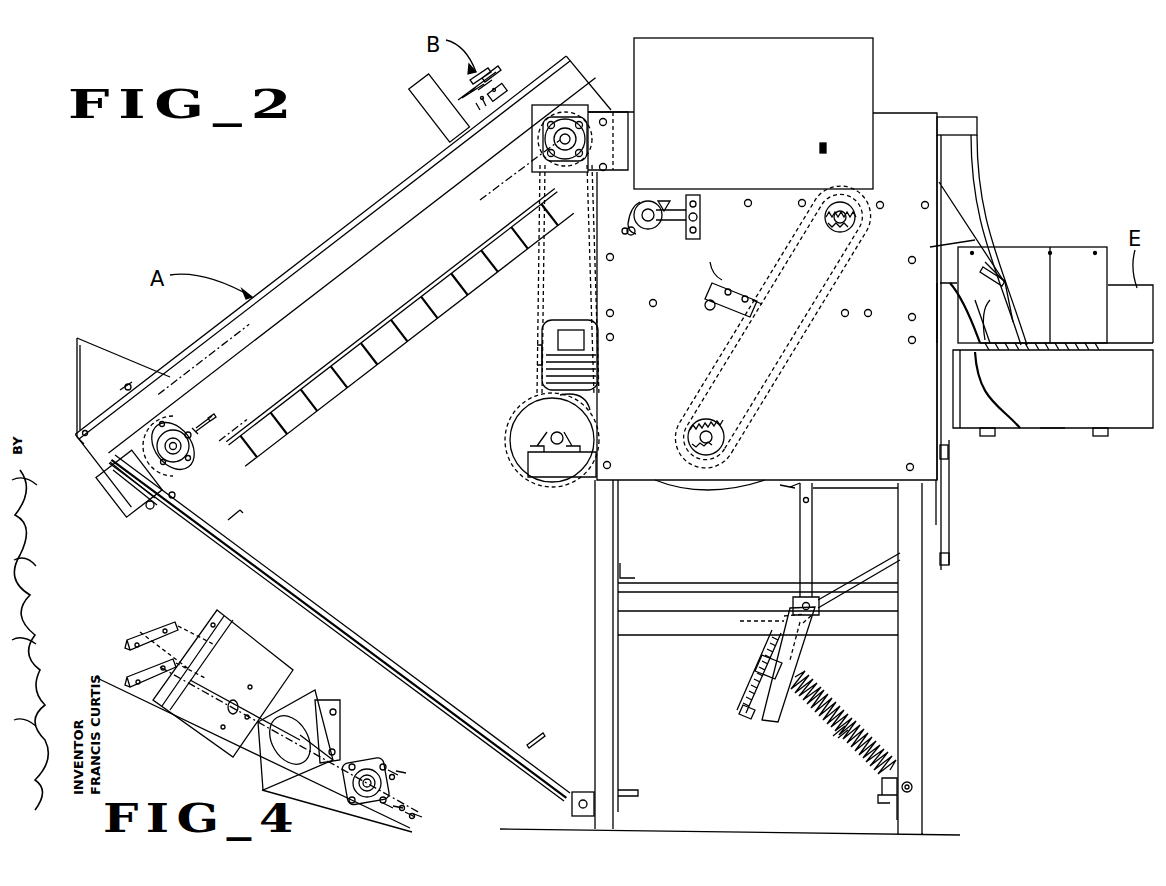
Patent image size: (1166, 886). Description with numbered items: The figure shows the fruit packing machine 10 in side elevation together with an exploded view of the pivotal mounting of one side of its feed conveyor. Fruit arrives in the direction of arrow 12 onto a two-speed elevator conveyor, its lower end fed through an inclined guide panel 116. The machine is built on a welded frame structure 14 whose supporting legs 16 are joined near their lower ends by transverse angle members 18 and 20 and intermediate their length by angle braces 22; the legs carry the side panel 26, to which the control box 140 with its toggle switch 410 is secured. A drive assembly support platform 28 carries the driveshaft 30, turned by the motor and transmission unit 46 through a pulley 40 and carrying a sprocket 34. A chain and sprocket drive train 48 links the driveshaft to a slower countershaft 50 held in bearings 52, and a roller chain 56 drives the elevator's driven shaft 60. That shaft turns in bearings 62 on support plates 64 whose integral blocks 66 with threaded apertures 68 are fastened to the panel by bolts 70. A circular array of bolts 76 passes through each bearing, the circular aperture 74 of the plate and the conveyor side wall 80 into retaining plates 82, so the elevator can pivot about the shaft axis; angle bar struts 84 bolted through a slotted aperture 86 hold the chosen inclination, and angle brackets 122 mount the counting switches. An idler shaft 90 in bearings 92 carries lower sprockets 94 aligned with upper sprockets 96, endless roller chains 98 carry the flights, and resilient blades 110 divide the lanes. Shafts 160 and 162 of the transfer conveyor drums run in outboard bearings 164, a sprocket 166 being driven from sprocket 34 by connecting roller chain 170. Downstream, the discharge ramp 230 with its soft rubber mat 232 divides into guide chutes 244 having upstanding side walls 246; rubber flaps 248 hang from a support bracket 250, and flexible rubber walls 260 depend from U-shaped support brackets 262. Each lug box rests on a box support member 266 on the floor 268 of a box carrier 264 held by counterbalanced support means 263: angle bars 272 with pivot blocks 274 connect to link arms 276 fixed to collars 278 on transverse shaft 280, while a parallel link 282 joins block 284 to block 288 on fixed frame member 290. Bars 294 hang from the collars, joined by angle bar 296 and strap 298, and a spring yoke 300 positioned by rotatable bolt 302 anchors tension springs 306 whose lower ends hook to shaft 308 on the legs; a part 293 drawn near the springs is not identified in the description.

In FIG. 2, the fruit packing machine 10 is at (352, 181).
In FIG. 2, the arrow 12 is at (57, 362).
In FIG. 2, the welded frame structure 14 is at (596, 555).
In FIG. 2, the supporting legs 16 is at (598, 686).
In FIG. 2, the transverse angle member 18 is at (628, 788).
In FIG. 2, the transverse angle member 20 is at (878, 788).
In FIG. 2, the longitudinally extending angle braces 22 is at (663, 616).
In FIG. 2, the side panel 26 is at (859, 370).
In FIG. 2, the drive assembly support platform 28 is at (518, 475).
In FIG. 2, the driveshaft 30 is at (715, 438).
In FIG. 2, the sprocket 34 is at (731, 423).
In FIG. 2, the pulley 40 is at (698, 490).
In FIG. 2, the motor and transmission unit 46 is at (540, 375).
In FIG. 2, the chain and sprocket drive train 48 is at (584, 420).
In FIG. 2, the countershaft 50 is at (563, 438).
In FIG. 2, the bearings 52 is at (566, 436).
In FIG. 2, the roller chain 56 is at (593, 293).
In FIG. 2, the driven shaft 60 is at (555, 149).
In FIG. 2, the bearings 62 is at (550, 135).
In FIG. 4, the bearings 62 is at (370, 760).
In FIG. 2, the support plate 64 is at (534, 167).
In FIG. 4, the support plate 64 is at (293, 700).
In FIG. 4, the integral block 66 is at (330, 703).
In FIG. 4, the threaded apertures 68 is at (333, 748).
In FIG. 2, the bolts 70 is at (608, 167).
In FIG. 2, the circular aperture 74 is at (580, 172).
In FIG. 4, the circular aperture 74 is at (290, 733).
In FIG. 2, the bolts 76 is at (580, 120).
In FIG. 4, the bolts 76 is at (405, 805).
In FIG. 2, the side wall 80 is at (373, 231).
In FIG. 4, the side wall 80 is at (257, 675).
In FIG. 4, the retaining plates 82 is at (125, 673).
In FIG. 2, the angle bar struts 84 is at (316, 588).
In FIG. 4, the angle bar struts 84 is at (245, 710).
In FIG. 2, the slotted aperture 86 is at (129, 493).
In FIG. 2, the idler shaft 90 is at (166, 445).
In FIG. 2, the bearings 92 is at (220, 461).
In FIG. 2, the lower sprockets 94 is at (210, 424).
In FIG. 2, the upper sprockets 96 is at (542, 186).
In FIG. 2, the endless roller chain 98 is at (418, 290).
In FIG. 2, the resilient rectangular blade 110 is at (443, 328).
In FIG. 2, the inclined guide panel 116 is at (97, 388).
In FIG. 2, the angle brackets 122 is at (433, 126).
In FIG. 2, the control box 140 is at (767, 91).
In FIG. 2, the shaft 160 is at (650, 220).
In FIG. 2, the shaft 162 is at (850, 223).
In FIG. 2, the outboard bearings 164 is at (645, 237).
In FIG. 2, the sprocket 166 is at (845, 231).
In FIG. 2, the connecting roller chain 170 is at (760, 410).
In FIG. 2, the discharge ramp 230 is at (1001, 284).
In FIG. 2, the soft rubber mat 232 is at (993, 270).
In FIG. 2, the guide chutes 244 is at (971, 195).
In FIG. 2, the upstanding side walls 246 is at (930, 247).
In FIG. 2, the rubber flap 248 is at (976, 202).
In FIG. 2, the support bracket 250 is at (975, 124).
In FIG. 2, the flexible rubber walls 260 is at (1028, 304).
In FIG. 2, the U-shaped support brackets 262 is at (1018, 252).
In FIG. 2, the counterbalanced support means 263 is at (946, 487).
In FIG. 2, the box carrier 264 is at (982, 365).
In FIG. 2, the box support member 266 is at (1130, 392).
In FIG. 2, the floor 268 is at (1050, 428).
In FIG. 2, the angle bars 272 is at (938, 513).
In FIG. 2, the pivot block 274 is at (943, 553).
In FIG. 2, the link arm 276 is at (865, 578).
In FIG. 2, the collar 278 is at (798, 590).
In FIG. 2, the transverse shaft 280 is at (800, 603).
In FIG. 2, the link 282 is at (830, 493).
In FIG. 2, the block 284 is at (948, 454).
In FIG. 2, the block 288 is at (813, 499).
In FIG. 2, the fixed frame member 290 is at (793, 488).
In FIG. 2, the spring end 293 is at (832, 730).
In FIG. 2, the bars 294 is at (798, 655).
In FIG. 2, the angle bar 296 is at (738, 621).
In FIG. 2, the strap 298 is at (765, 717).
In FIG. 2, the spring yoke 300 is at (760, 658).
In FIG. 2, the rotatable bolt 302 is at (746, 688).
In FIG. 2, the tension springs 306 is at (838, 723).
In FIG. 2, the shaft 308 is at (913, 785).
In FIG. 2, the toggle switch 410 is at (818, 148).